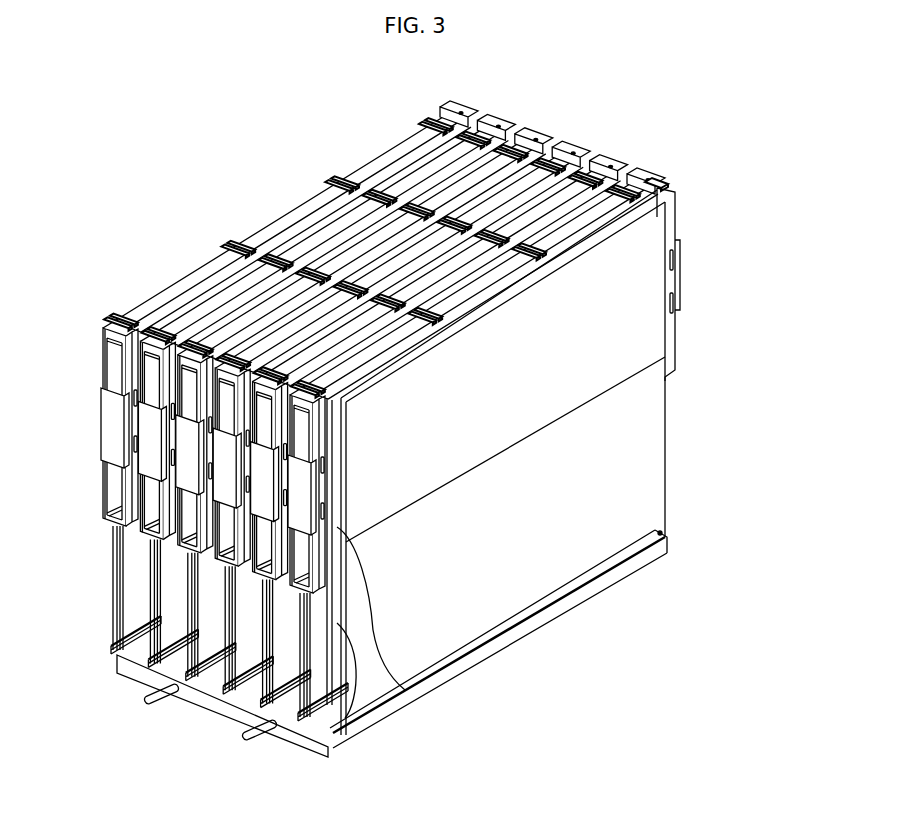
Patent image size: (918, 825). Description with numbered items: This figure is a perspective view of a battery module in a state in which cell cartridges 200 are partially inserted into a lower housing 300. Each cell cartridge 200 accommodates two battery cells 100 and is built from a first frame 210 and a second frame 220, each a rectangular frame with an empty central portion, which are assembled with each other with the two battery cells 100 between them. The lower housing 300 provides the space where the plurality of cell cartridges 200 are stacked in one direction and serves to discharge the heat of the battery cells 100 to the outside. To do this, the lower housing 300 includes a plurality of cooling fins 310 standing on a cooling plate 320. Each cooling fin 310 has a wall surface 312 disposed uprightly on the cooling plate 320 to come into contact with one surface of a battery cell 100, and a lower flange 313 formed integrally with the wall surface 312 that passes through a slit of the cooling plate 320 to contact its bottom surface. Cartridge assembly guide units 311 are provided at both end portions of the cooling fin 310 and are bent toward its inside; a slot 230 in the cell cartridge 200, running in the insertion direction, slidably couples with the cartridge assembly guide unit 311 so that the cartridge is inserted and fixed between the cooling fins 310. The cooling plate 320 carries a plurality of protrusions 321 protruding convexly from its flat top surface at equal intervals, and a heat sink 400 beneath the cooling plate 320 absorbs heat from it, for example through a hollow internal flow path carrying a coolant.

The battery cell 100 is at (620, 298).
The cell cartridge 200 is at (517, 125).
The first frame 210 is at (656, 182).
The second frame 220 is at (663, 217).
The slot 230 is at (383, 660).
The lower housing 300 is at (106, 623).
The cooling fin 310 is at (678, 460).
The cartridge assembly guide unit 311 is at (362, 720).
The wall surface 312 is at (618, 430).
The lower flange 313 is at (118, 652).
The cooling plate 320 is at (240, 718).
The protrusion 321 is at (205, 695).
The heat sink 400 is at (567, 625).